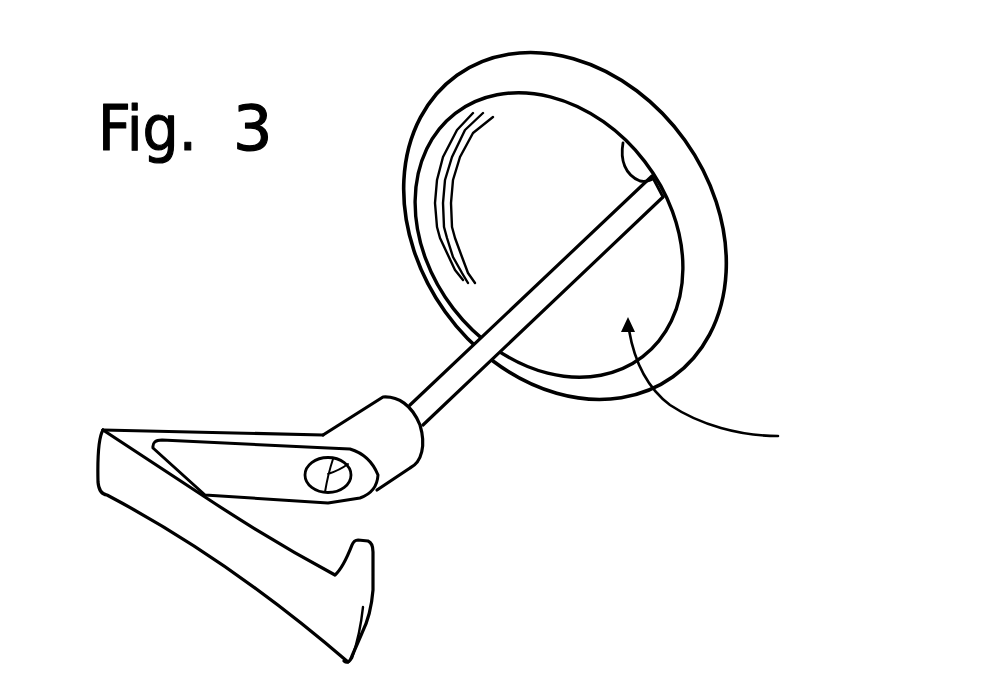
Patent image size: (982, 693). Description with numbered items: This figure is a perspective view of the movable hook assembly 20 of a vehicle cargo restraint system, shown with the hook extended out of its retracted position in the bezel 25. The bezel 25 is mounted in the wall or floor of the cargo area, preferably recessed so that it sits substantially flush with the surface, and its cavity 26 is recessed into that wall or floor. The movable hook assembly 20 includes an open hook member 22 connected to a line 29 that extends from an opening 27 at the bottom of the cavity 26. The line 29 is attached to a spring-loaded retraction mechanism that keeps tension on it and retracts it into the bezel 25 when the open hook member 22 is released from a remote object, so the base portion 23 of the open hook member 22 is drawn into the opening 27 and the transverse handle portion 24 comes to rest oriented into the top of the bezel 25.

The movable hook assembly 20 is at (285, 312).
The open hook member 22 is at (374, 585).
The base portion 23 is at (397, 460).
The transverse handle portion 24 is at (188, 554).
The bezel 25 is at (727, 298).
The cavity 26 is at (721, 386).
The opening 27 is at (623, 143).
The line 29 is at (455, 385).